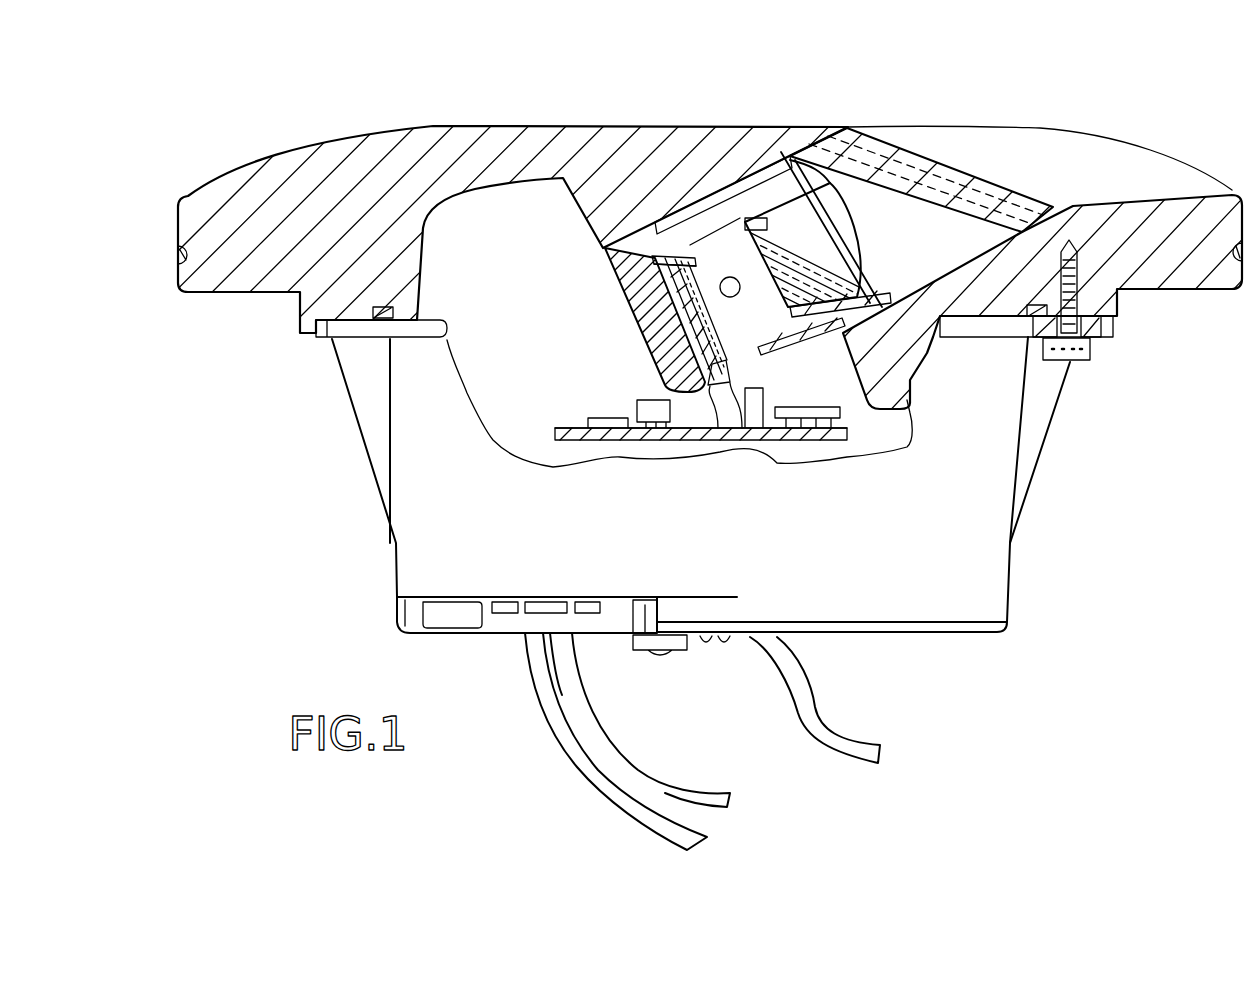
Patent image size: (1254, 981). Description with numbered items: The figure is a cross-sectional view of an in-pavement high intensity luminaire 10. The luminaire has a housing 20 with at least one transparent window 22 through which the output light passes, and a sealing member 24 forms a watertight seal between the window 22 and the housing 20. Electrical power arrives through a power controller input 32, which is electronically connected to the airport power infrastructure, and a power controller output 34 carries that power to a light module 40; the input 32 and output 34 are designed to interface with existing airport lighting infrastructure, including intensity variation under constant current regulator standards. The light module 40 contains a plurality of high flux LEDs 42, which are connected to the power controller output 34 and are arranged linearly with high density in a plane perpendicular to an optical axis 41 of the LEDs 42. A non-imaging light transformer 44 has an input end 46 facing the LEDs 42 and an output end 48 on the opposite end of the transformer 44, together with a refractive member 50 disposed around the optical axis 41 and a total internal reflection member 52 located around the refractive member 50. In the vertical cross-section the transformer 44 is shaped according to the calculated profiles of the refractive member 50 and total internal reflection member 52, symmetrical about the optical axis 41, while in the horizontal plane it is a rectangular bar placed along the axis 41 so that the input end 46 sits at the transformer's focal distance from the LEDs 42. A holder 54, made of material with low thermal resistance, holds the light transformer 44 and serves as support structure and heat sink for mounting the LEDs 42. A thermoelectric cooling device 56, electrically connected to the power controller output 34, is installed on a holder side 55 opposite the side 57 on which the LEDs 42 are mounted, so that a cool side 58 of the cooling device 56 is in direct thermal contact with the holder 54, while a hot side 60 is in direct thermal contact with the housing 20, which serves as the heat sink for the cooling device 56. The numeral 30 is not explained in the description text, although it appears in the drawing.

The in-pavement high intensity luminaire 10 is at (203, 118).
The housing 20 is at (372, 150).
The transparent window 22 is at (952, 185).
The sealing member 24 is at (1072, 236).
The circuit board 30 is at (718, 443).
The power controller input 32 is at (627, 807).
The power controller output 34 is at (692, 440).
The light module 40 is at (730, 220).
The optical axis 41 is at (750, 273).
The high flux LEDs 42 is at (697, 253).
The non-imaging light transformer 44 is at (827, 340).
The input end 46 is at (660, 290).
The output end 48 is at (842, 228).
The refractive member 50 is at (833, 206).
The total internal reflection member 52 is at (862, 294).
The holder 54 is at (703, 197).
The holder side 55 is at (653, 327).
The thermoelectric cooling device 56 is at (662, 320).
The side 57 is at (754, 349).
The cool side 58 is at (650, 256).
The hot side 60 is at (645, 262).